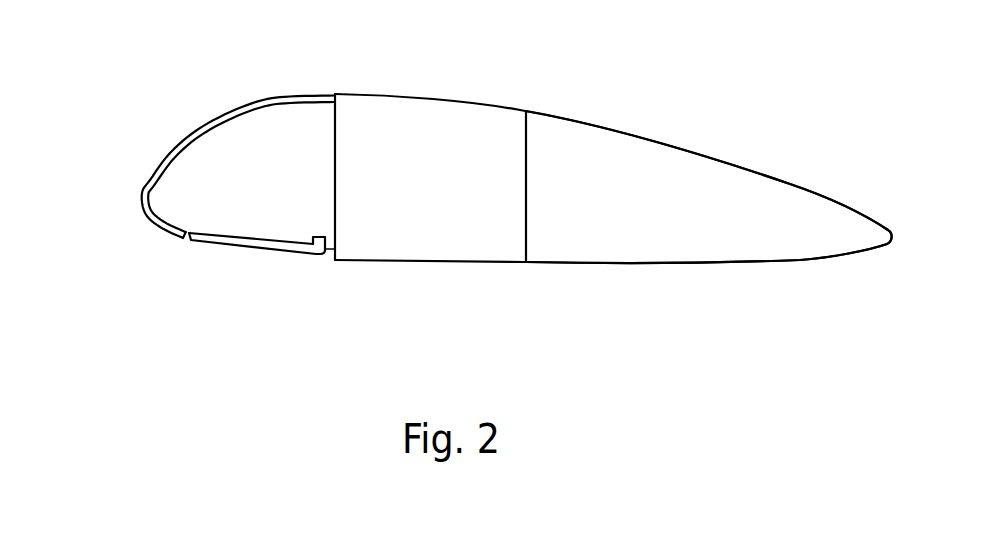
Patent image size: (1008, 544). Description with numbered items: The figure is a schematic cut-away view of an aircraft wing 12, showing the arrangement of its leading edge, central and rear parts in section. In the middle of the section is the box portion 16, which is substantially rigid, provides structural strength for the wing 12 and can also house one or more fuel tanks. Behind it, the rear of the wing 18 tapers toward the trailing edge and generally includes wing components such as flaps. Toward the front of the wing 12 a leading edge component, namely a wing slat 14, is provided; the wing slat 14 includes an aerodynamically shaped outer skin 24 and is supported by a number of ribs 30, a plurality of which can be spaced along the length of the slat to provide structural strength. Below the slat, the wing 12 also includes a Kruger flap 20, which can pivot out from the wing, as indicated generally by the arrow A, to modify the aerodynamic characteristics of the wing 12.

The wing 12 is at (515, 110).
The wing slat 14 is at (138, 149).
The box portion 16 is at (467, 230).
The rear of the wing 18 is at (723, 203).
The Kruger flap 20 is at (228, 243).
The outer skin 24 is at (211, 117).
The rib 30 is at (270, 143).
The arrow A is at (186, 355).